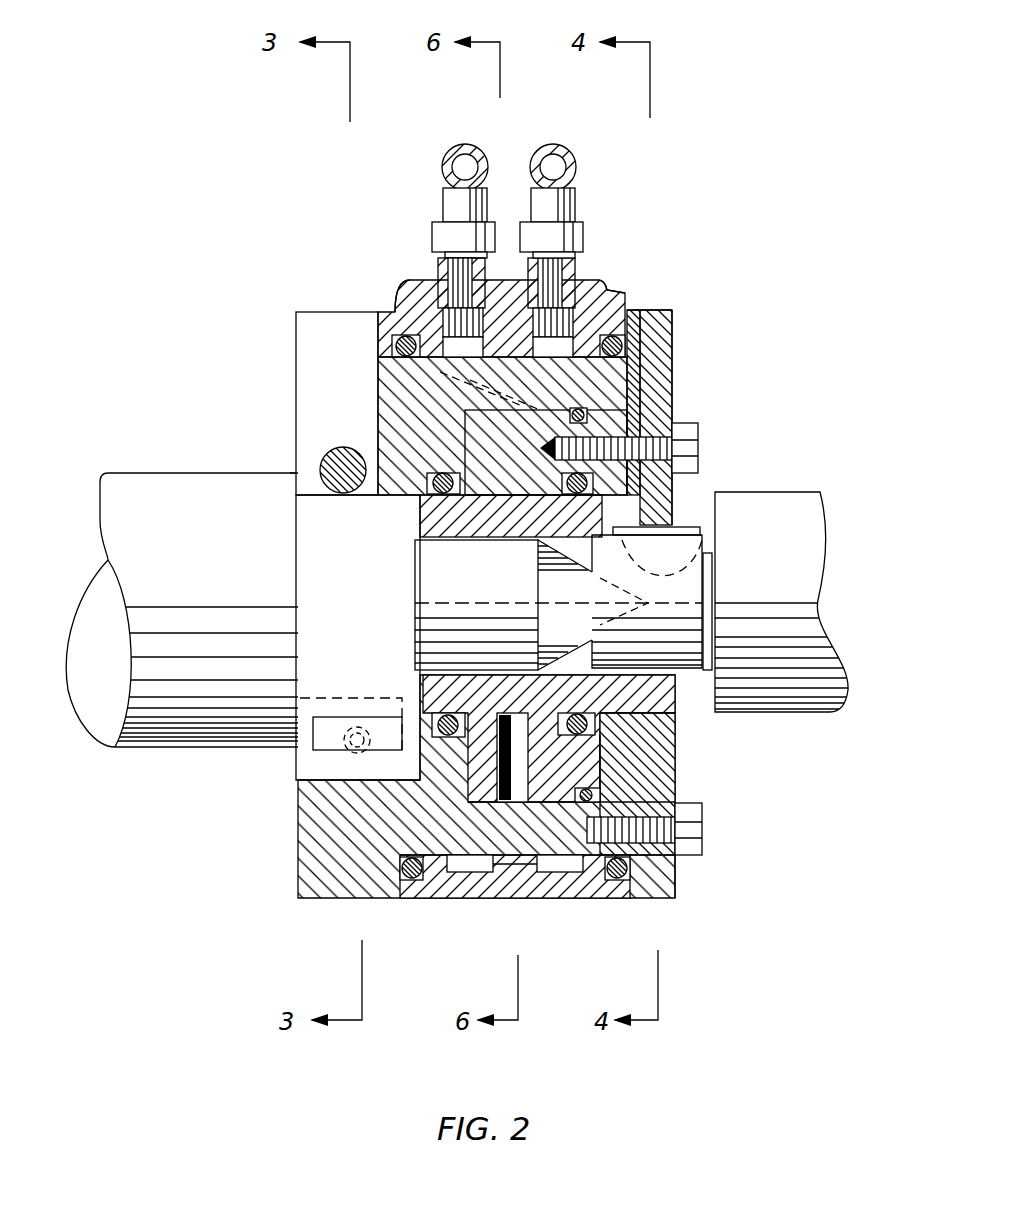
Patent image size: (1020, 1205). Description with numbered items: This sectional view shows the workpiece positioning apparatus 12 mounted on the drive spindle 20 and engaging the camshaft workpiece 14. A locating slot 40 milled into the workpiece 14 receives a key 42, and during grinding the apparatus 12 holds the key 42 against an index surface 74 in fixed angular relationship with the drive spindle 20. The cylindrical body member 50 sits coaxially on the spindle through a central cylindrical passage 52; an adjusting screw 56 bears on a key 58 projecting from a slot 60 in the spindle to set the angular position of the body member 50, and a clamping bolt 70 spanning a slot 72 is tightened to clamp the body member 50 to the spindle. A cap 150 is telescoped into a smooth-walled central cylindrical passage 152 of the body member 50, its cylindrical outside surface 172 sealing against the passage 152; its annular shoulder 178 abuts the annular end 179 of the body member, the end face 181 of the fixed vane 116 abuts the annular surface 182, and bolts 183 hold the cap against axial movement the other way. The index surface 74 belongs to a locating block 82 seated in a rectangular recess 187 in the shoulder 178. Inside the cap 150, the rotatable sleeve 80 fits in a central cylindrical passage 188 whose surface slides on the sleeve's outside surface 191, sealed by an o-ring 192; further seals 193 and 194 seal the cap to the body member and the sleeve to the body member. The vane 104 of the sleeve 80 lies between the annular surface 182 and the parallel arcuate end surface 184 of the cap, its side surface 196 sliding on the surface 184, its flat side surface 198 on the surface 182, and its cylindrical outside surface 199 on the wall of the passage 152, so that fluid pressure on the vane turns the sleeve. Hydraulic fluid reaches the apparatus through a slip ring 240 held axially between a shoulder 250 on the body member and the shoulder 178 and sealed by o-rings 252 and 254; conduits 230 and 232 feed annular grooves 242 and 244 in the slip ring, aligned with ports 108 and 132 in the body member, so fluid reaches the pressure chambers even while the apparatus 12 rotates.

The workpiece positioning apparatus 12 is at (270, 215).
The workpiece 14 is at (820, 630).
The drive spindle 20 is at (160, 468).
The locating slot 40 is at (642, 574).
The key 42 is at (692, 525).
The cylindrical body member 50 is at (303, 306).
The central cylindrical passage 52 is at (294, 490).
The positioning or adjusting screw 56 is at (345, 755).
The key 58 is at (313, 740).
The slot 60 is at (300, 700).
The clamping bolt 70 is at (355, 475).
The slot 72 is at (314, 386).
The index surface 74 is at (718, 550).
The rotatable drive element or sleeve 80 is at (690, 692).
The locating block 82 is at (672, 380).
The vane 104 is at (460, 758).
The port 108 is at (425, 270).
The fixed vane 116 is at (448, 400).
The port 132 is at (604, 290).
The cap 150 is at (650, 300).
The central cylindrical passage 152 is at (672, 415).
The cylindrical outside surface 172 is at (668, 356).
The annular shoulder 178 is at (678, 890).
The annular end 179 is at (682, 870).
The end face 181 is at (478, 445).
The annular surface 182 is at (510, 875).
The bolts 183 is at (700, 830).
The arcuate end surface 184 is at (580, 800).
The rectangular recess 187 is at (665, 322).
The central cylindrical passage 188 is at (618, 712).
The outside surface 191 is at (640, 725).
The o-ring 192 is at (645, 748).
The seal 193 is at (598, 880).
The seal 194 is at (437, 718).
The side surface 196 is at (548, 775).
The flat side surface 198 is at (470, 875).
The cylindrical outside surface 199 is at (516, 803).
The conduit 230 is at (578, 183).
The conduit 232 is at (442, 170).
The slip ring 240 is at (500, 278).
The annular groove 242 is at (578, 875).
The annular groove 244 is at (478, 868).
The radially extending shoulder 250 is at (420, 335).
The o-ring seal 252 is at (392, 346).
The o-ring seal 254 is at (610, 320).